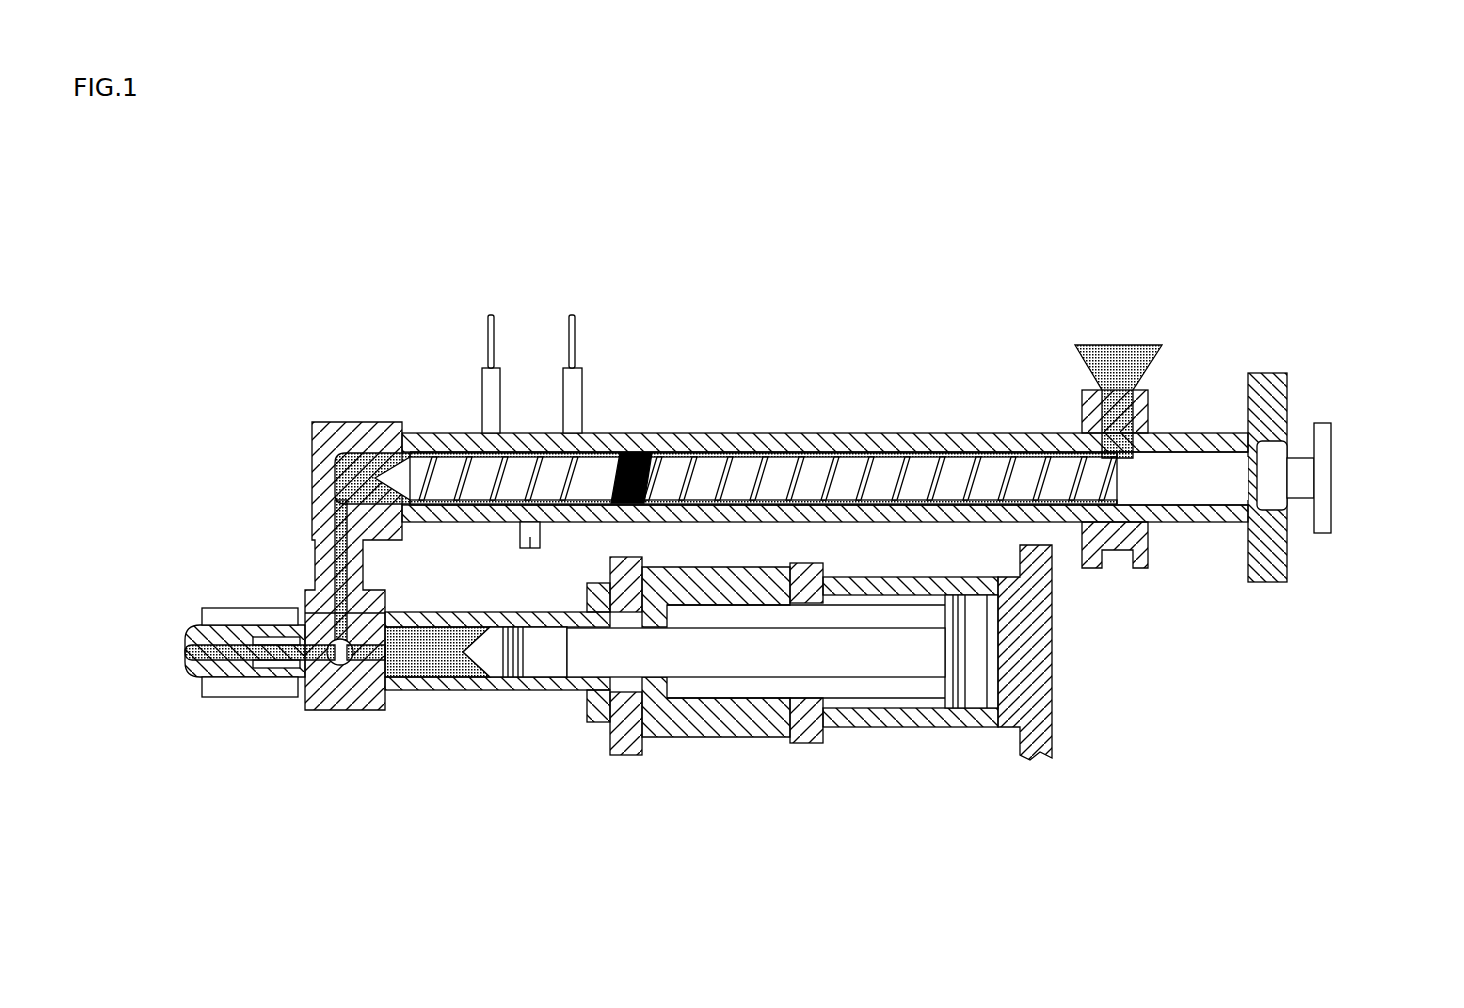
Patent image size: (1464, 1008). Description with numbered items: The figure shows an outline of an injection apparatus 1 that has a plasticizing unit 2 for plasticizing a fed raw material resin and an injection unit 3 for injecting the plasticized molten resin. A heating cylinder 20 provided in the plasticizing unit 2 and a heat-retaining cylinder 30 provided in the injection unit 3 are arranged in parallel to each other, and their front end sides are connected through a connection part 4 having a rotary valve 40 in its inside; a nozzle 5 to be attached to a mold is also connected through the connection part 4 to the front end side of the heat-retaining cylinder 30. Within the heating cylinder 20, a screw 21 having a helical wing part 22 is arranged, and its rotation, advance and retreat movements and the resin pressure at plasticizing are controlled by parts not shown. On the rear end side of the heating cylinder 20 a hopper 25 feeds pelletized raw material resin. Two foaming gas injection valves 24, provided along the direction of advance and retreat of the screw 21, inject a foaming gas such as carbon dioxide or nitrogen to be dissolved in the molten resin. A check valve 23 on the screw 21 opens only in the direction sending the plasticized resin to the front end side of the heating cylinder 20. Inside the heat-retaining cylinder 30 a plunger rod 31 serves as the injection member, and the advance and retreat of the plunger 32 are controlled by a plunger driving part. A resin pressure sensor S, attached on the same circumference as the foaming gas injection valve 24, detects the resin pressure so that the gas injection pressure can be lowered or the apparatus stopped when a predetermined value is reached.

The injection apparatus 1 is at (1296, 238).
The plasticizing unit 2 is at (1360, 478).
The injection unit 3 is at (1080, 652).
The connection part 4 is at (296, 556).
The nozzle 5 is at (190, 650).
The heating cylinder 20 is at (884, 440).
The screw 21 is at (1023, 478).
The helical wing part 22 is at (768, 470).
The check valve 23 is at (636, 455).
The foaming gas injection valve 24 is at (490, 398).
The hopper 25 is at (1120, 352).
The heat-retaining cylinder 30 is at (487, 693).
The plunger rod 31 is at (700, 652).
The plunger 32 is at (870, 652).
The rotary valve 40 is at (336, 664).
The resin pressure sensor S is at (531, 548).